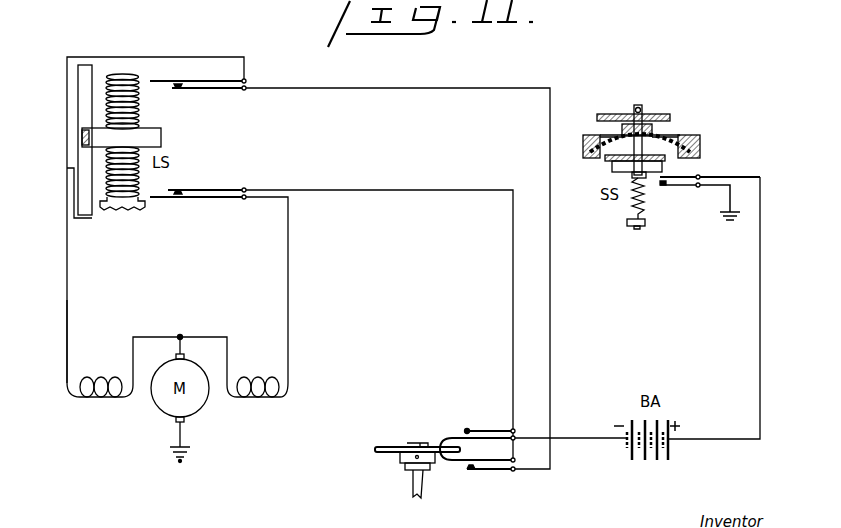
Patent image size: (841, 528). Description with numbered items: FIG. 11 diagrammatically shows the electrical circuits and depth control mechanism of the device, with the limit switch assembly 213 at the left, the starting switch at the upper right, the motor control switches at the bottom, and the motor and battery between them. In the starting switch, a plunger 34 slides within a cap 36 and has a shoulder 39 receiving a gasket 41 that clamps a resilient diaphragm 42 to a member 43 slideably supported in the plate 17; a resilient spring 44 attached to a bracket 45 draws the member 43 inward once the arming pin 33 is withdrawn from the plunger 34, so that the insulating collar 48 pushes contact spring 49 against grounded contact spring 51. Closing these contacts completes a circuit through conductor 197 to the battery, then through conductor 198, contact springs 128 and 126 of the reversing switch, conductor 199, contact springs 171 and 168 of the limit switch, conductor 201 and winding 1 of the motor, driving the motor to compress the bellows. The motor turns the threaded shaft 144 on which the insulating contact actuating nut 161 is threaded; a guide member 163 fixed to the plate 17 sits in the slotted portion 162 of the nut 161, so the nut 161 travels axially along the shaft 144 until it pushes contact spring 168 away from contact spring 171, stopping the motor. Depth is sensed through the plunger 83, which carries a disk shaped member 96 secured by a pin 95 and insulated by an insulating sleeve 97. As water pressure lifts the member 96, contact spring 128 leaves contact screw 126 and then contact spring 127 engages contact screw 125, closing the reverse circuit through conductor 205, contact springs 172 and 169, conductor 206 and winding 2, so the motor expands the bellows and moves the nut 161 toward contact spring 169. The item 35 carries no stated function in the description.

The limit switch assembly 213 is at (155, 193).
The guide member 163 is at (85, 65).
The threaded shaft 144 is at (122, 75).
The contact actuating nut 161 is at (162, 137).
The slotted portion 162 is at (82, 139).
The contact spring 168 is at (184, 80).
The contact spring 171 is at (185, 91).
The contact spring 172 is at (186, 189).
The contact spring 169 is at (165, 199).
The conductor 199 is at (521, 91).
The conductor 205 is at (513, 268).
The conductor 206 is at (288, 268).
The conductor 201 is at (67, 290).
The winding 1 is at (123, 367).
The winding 2 is at (234, 367).
The adjustable contact screw 125 is at (468, 430).
The contact spring 127 is at (450, 421).
The contact spring 128 is at (500, 460).
The adjustable contact screw 126 is at (470, 471).
The disk shaped member 96 is at (383, 447).
The pin 95 is at (417, 458).
The insulating sleeve 97 is at (405, 468).
The plunger 83 is at (418, 498).
The conductor 198 is at (570, 438).
The conductor 197 is at (760, 300).
The contact spring 49 is at (700, 177).
The contact spring 51 is at (658, 187).
The plate 17 is at (695, 142).
The cap 36 is at (668, 112).
The arming pin 33 is at (642, 115).
The stem 35 is at (637, 105).
The plunger 34 is at (641, 108).
The shoulder 39 is at (626, 121).
The resilient diaphragm 42 is at (672, 131).
The gasket 41 is at (597, 136).
The member 43 is at (683, 158).
The collar 48 is at (625, 173).
The resilient spring 44 is at (632, 206).
The bracket 45 is at (631, 229).